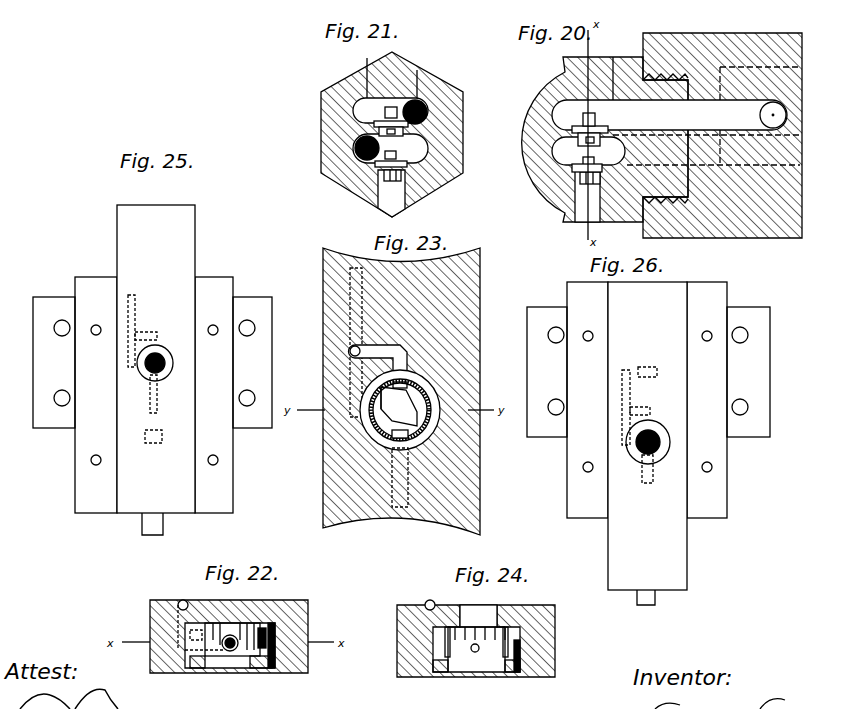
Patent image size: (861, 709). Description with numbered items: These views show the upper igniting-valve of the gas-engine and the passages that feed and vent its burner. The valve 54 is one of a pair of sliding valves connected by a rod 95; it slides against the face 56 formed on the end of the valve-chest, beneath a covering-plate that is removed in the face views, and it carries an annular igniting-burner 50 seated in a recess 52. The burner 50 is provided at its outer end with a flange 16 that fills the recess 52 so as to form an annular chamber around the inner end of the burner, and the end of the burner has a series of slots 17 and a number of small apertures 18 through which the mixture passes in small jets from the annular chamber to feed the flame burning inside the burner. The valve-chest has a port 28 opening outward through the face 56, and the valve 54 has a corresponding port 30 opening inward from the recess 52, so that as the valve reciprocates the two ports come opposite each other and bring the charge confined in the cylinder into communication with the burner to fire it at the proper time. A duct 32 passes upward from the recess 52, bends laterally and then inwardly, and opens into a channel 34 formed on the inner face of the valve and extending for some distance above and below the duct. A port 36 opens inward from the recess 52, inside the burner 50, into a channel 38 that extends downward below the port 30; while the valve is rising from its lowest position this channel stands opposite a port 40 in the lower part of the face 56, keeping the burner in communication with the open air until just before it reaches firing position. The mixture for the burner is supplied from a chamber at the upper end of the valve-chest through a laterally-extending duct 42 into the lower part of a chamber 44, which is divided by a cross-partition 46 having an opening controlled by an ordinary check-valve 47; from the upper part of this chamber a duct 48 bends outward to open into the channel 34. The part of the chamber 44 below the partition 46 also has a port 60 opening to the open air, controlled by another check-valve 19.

In FIG. 25, the flange 16 is at (169, 358).
In FIG. 26, the flange 16 is at (661, 433).
In FIG. 22, the flange 16 is at (229, 673).
In FIG. 24, the flange 16 is at (473, 660).
In FIG. 22, the slots 17 is at (232, 636).
In FIG. 24, the slots 17 is at (475, 644).
In FIG. 23, the small apertures 18 is at (401, 413).
In FIG. 22, the small apertures 18 is at (268, 640).
In FIG. 24, the small apertures 18 is at (476, 642).
In FIG. 21, the check-valve 19 is at (398, 165).
In FIG. 20, the check-valve 19 is at (598, 168).
In FIG. 26, the port 28 is at (648, 364).
In FIG. 25, the port 30 is at (150, 371).
In FIG. 23, the port 30 is at (399, 406).
In FIG. 26, the port 30 is at (641, 452).
In FIG. 24, the port 30 is at (478, 616).
In FIG. 25, the duct 32 is at (156, 336).
In FIG. 23, the duct 32 is at (378, 360).
In FIG. 26, the duct 32 is at (650, 412).
In FIG. 22, the duct 32 is at (184, 648).
In FIG. 25, the channel 34 is at (135, 320).
In FIG. 23, the channel 34 is at (375, 327).
In FIG. 26, the channel 34 is at (630, 400).
In FIG. 22, the channel 34 is at (183, 600).
In FIG. 24, the channel 34 is at (431, 602).
In FIG. 23, the port 36 is at (392, 427).
In FIG. 25, the channel 38 is at (150, 408).
In FIG. 23, the channel 38 is at (399, 477).
In FIG. 26, the channel 38 is at (653, 477).
In FIG. 25, the port 40 is at (154, 443).
In FIG. 21, the laterally-extending duct 42 is at (362, 162).
In FIG. 21, the chamber 44 is at (330, 129).
In FIG. 20, the chamber 44 is at (531, 165).
In FIG. 21, the cross-partition 46 is at (378, 124).
In FIG. 20, the cross-partition 46 is at (577, 126).
In FIG. 21, the check-valve 47 is at (394, 106).
In FIG. 20, the check-valve 47 is at (596, 128).
In FIG. 21, the duct 48 is at (420, 106).
In FIG. 20, the duct 48 is at (669, 115).
In FIG. 23, the igniting-burner 50 is at (380, 428).
In FIG. 22, the igniting-burner 50 is at (241, 652).
In FIG. 24, the igniting-burner 50 is at (476, 648).
In FIG. 23, the recess 52 is at (440, 420).
In FIG. 22, the recess 52 is at (272, 666).
In FIG. 24, the recess 52 is at (516, 660).
In FIG. 25, the valve 54 is at (156, 359).
In FIG. 23, the valve 54 is at (401, 391).
In FIG. 26, the valve 54 is at (647, 436).
In FIG. 22, the valve 54 is at (292, 603).
In FIG. 24, the valve 54 is at (555, 638).
In FIG. 20, the face 56 is at (727, 45).
In FIG. 25, the face 56 is at (152, 395).
In FIG. 26, the face 56 is at (648, 400).
In FIG. 21, the port 60 is at (391, 193).
In FIG. 20, the port 60 is at (587, 193).
In FIG. 25, the rod 95 is at (142, 527).
In FIG. 26, the rod 95 is at (655, 600).